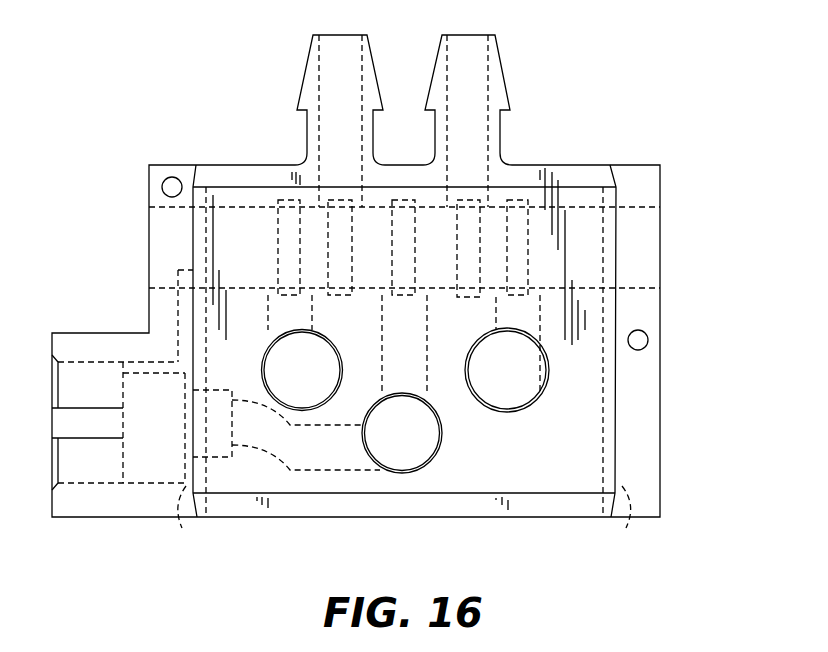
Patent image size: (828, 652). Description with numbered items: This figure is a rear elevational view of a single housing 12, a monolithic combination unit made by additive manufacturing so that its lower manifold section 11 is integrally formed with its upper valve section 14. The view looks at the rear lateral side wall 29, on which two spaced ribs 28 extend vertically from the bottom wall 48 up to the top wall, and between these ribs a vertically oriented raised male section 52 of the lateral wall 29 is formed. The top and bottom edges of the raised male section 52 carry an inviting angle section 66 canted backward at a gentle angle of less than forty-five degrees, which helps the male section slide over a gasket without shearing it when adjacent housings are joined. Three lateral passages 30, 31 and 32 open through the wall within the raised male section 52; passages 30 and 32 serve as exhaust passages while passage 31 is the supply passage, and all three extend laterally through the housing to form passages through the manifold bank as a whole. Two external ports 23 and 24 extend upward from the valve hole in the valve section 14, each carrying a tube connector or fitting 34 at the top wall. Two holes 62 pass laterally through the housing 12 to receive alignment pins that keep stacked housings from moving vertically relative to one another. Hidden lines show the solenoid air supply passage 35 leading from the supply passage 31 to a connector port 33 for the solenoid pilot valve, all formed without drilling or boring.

The housing 12 is at (607, 111).
The valve section 14 is at (627, 183).
The external port 24 is at (328, 72).
The external port 23 is at (467, 72).
The tube connector or fitting 34 is at (433, 65).
The inviting angle section 66 is at (252, 173).
The hole 62 is at (163, 188).
The lateral side wall 29 is at (633, 373).
The raised male section 52 is at (521, 450).
The lateral passage 32 is at (271, 355).
The lateral passage 31 is at (426, 462).
The lateral passage 30 is at (509, 406).
The connector port 33 is at (122, 425).
The solenoid air supply passage 35 is at (291, 445).
The rib 28 is at (403, 524).
The manifold section 11 is at (330, 485).
The bottom wall 48 is at (530, 517).